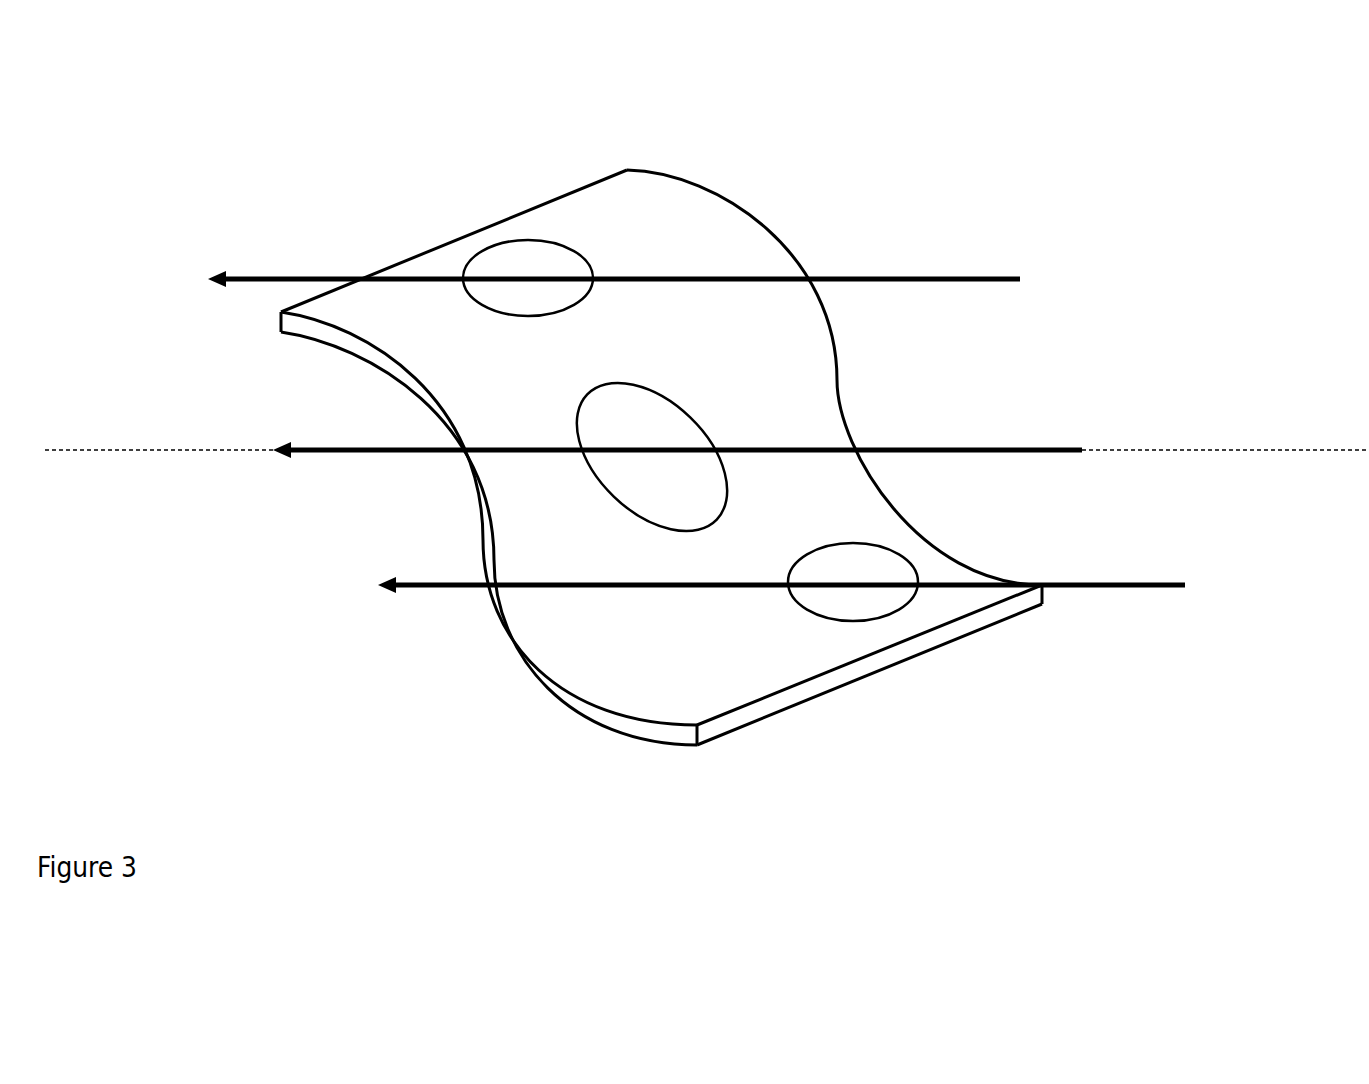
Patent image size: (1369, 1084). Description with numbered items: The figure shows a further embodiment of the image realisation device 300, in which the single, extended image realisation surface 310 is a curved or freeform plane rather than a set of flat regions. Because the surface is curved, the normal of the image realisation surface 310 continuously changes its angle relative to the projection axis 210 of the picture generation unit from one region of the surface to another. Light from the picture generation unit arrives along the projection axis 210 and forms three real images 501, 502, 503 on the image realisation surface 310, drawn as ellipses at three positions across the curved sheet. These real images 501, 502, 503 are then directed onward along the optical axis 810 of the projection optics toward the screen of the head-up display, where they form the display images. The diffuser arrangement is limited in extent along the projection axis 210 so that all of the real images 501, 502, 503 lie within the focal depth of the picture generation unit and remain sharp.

The image realisation device 300 is at (961, 145).
The image realisation surface 310 is at (655, 163).
The real image 501 is at (572, 251).
The real image 502 is at (655, 393).
The real image 503 is at (797, 598).
The projection axis 210 is at (1222, 452).
The optical axis 810 is at (100, 451).